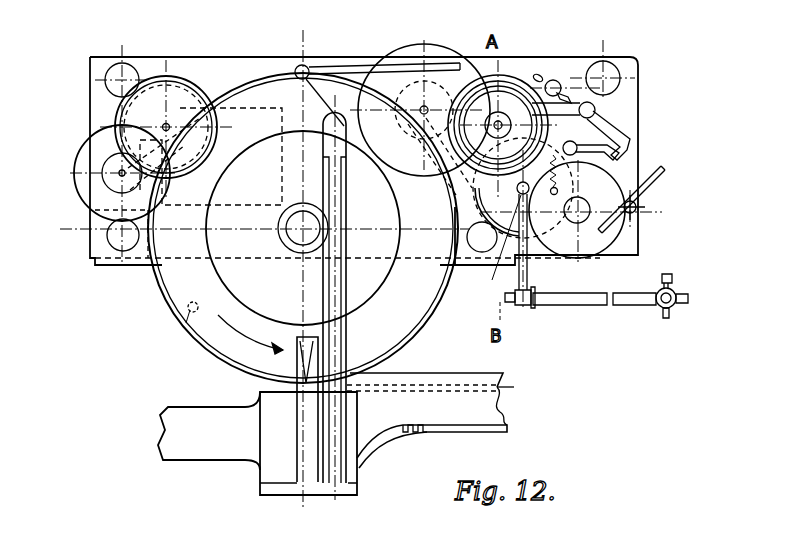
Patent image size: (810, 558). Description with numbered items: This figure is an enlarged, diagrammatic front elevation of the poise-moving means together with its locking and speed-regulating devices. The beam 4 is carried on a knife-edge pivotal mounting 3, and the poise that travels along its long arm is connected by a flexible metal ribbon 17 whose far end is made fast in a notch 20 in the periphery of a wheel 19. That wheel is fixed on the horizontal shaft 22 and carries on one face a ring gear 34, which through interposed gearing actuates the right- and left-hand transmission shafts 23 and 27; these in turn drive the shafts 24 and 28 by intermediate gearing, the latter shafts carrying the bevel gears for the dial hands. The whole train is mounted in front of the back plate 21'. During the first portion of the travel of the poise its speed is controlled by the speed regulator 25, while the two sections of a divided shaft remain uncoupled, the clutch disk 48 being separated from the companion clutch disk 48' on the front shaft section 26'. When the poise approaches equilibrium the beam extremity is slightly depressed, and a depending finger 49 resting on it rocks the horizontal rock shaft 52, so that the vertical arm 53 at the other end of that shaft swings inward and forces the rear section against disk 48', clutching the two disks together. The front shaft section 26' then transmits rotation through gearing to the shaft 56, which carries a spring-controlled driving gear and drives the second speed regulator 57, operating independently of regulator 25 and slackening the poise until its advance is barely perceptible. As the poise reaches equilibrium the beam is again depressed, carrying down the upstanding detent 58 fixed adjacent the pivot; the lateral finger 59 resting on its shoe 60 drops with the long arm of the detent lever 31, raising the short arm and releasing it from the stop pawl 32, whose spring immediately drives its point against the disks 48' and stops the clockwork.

The knife-edge pivotal mounting 3 is at (302, 362).
The beam 4 is at (440, 373).
The flexible metal ribbon 17 is at (514, 386).
The wheel 19 is at (160, 278).
The notch 20 is at (190, 318).
The back plate 21' is at (189, 99).
The horizontal shaft 22 is at (300, 238).
The right-hand transmission shaft 23 is at (430, 106).
The shaft 24 is at (502, 118).
The speed regulator 25 is at (556, 82).
The front shaft section 26' is at (568, 265).
The left-hand transmission shaft 27 is at (108, 177).
The shaft 28 is at (163, 127).
The detent lever 31 is at (358, 63).
The stop pawl 32 is at (576, 146).
The ring gear 34 is at (163, 288).
The clutch disk 48 is at (505, 251).
The clutch disk 48' is at (523, 216).
The depending finger 49 is at (675, 279).
The horizontal rock shaft 52 is at (598, 278).
The vertical arm 53 is at (532, 292).
The shaft 56 is at (582, 205).
The speed regulator 57 is at (640, 207).
The detent 58 is at (376, 290).
The lateral finger 59 is at (310, 66).
The shoe 60 is at (298, 66).